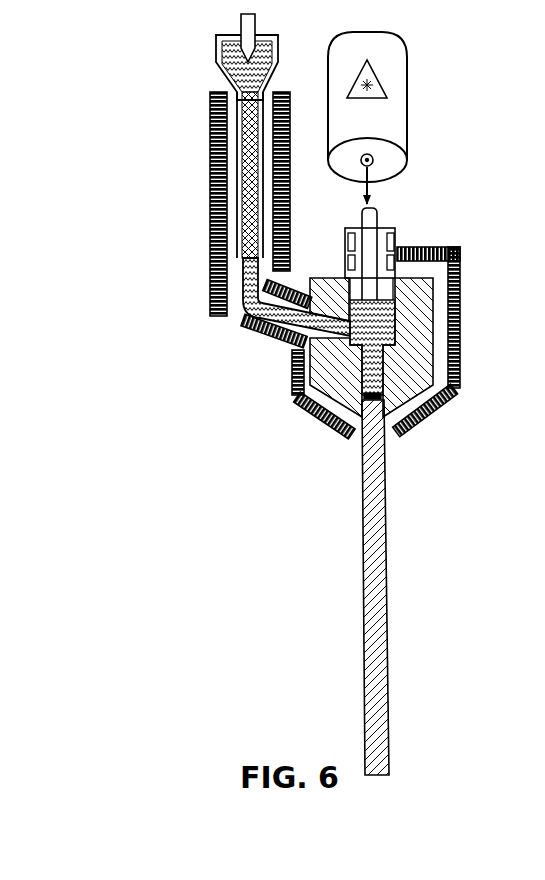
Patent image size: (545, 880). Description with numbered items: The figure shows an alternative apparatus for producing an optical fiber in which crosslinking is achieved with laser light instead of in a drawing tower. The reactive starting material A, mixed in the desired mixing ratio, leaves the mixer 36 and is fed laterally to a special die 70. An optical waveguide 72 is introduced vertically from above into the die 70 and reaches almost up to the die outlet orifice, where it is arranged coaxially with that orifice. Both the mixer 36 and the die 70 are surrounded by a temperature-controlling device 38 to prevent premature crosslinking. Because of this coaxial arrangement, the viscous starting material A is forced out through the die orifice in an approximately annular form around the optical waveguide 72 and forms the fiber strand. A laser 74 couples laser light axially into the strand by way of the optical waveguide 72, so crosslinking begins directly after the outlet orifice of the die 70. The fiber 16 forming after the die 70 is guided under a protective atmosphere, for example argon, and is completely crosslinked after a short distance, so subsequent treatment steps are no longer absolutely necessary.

The reactive starting material A is at (230, 53).
The mixer 36 is at (248, 162).
The temperature-controlling device 38 is at (212, 223).
The laser 74 is at (388, 80).
The optical waveguide 72 is at (380, 214).
The die 70 is at (392, 386).
The fiber 16 is at (378, 585).